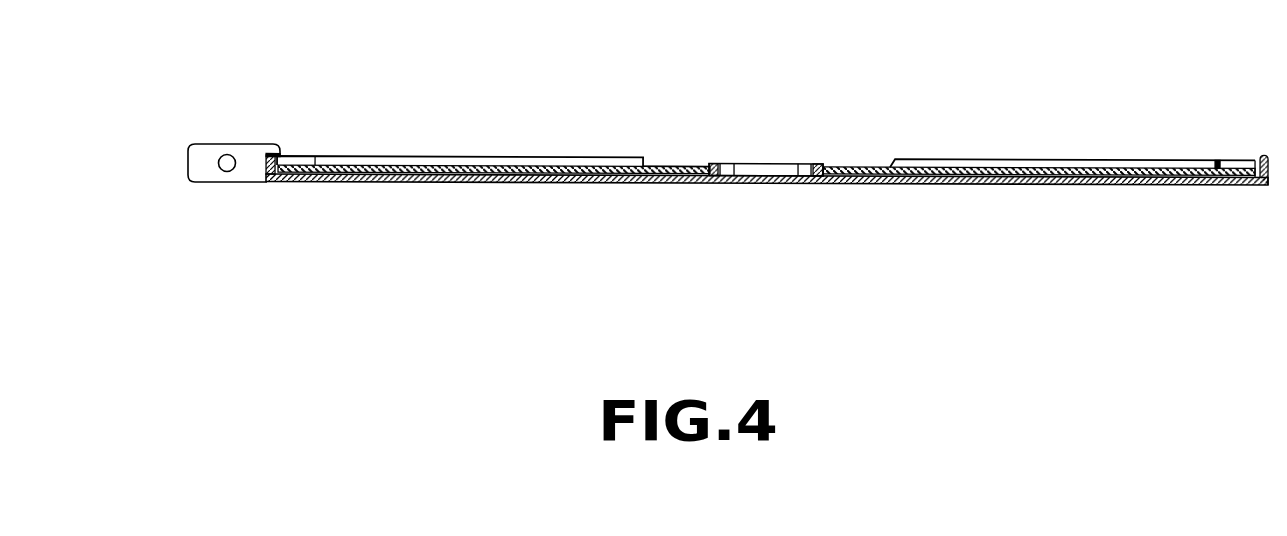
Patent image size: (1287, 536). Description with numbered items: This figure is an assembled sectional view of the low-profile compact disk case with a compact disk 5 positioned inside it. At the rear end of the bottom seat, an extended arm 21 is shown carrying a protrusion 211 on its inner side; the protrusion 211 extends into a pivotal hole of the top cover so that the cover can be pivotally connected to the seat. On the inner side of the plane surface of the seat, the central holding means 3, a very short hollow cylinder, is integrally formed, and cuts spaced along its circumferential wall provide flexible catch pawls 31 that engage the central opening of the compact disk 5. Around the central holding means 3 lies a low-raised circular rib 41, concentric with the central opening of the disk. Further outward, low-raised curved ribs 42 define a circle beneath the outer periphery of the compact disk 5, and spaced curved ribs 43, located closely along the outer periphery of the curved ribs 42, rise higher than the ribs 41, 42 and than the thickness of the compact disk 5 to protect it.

The central holding means 3 is at (764, 142).
The flexible catch pawls 31 is at (823, 160).
The compact disk 5 is at (665, 162).
The extended arm 21 is at (192, 176).
The protrusion 211 is at (222, 155).
The low-raised circular rib 41 is at (653, 180).
The low-raised curved ribs 42 is at (303, 184).
The spaced curved ribs 43 is at (318, 152).